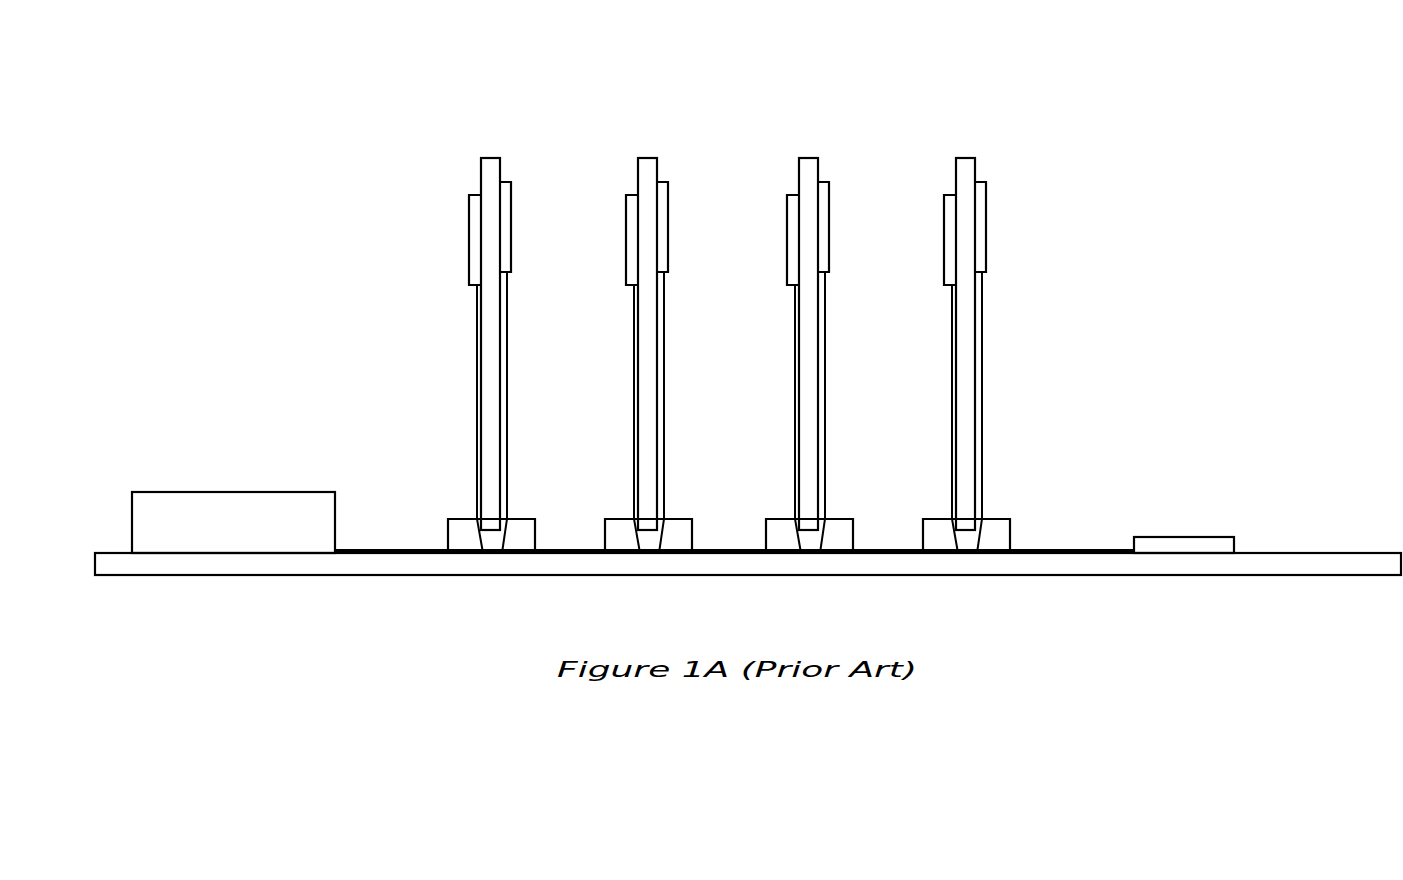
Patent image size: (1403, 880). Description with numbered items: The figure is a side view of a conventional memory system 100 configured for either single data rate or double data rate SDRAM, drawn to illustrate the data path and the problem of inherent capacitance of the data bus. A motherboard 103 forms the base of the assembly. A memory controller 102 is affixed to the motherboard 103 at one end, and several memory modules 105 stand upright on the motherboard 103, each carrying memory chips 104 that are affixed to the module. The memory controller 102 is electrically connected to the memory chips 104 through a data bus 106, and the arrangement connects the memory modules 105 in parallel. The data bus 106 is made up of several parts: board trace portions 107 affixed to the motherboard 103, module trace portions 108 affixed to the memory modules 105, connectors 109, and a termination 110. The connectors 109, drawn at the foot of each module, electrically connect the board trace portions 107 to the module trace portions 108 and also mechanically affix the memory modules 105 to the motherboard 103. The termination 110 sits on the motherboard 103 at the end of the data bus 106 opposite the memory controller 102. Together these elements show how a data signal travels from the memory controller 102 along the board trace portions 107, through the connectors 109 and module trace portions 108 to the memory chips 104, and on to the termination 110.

The memory system 100 is at (1253, 73).
The memory controller 102 is at (239, 492).
The motherboard 103 is at (1293, 552).
The memory chips 104 is at (469, 216).
The memory modules 105 is at (490, 158).
The data bus 106 is at (899, 555).
The board trace portions 107 is at (392, 547).
The module trace portions 108 is at (476, 365).
The connectors 109 is at (523, 518).
The termination 110 is at (1200, 537).